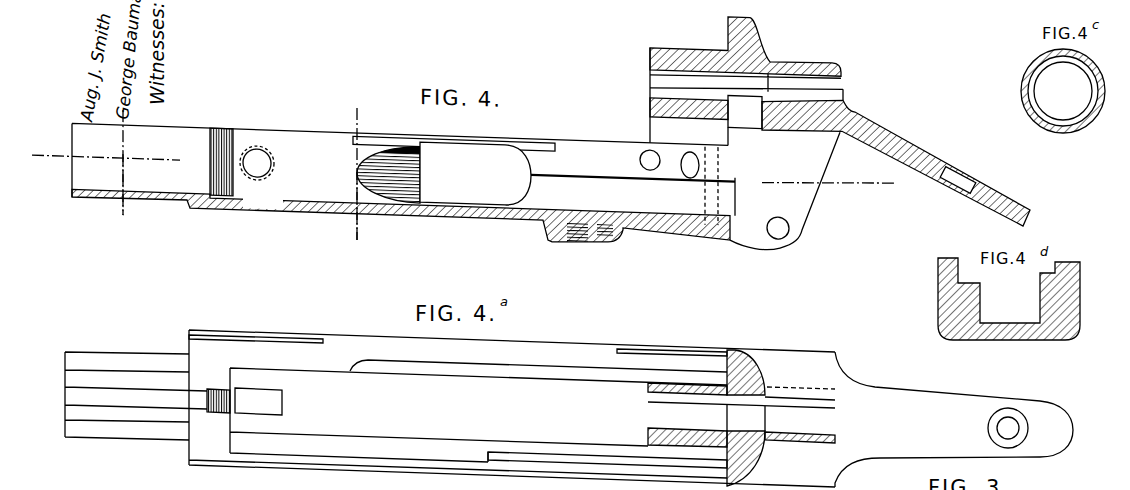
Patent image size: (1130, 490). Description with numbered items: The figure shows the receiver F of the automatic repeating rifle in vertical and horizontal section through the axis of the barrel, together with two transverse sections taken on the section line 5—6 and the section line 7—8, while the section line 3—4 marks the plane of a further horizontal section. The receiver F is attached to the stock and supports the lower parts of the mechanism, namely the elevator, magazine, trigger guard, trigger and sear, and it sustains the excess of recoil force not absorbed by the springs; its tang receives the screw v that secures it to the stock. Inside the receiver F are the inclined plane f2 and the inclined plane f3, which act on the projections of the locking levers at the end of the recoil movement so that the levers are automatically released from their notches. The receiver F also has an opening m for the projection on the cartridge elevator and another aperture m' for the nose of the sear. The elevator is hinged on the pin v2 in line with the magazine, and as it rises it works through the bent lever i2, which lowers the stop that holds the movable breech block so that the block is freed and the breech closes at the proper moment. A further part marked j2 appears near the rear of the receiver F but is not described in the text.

In FIG. 4, the section line 3—4 3 is at (102, 150).
In FIG. 4, the section line 3— 4 is at (828, 175).
In FIG. 4, the section line 5—6 5 is at (117, 155).
In FIG. 4, the section line 5— 6 is at (113, 188).
In FIG. 4, the section line 7—8 7 is at (350, 169).
In FIG. 4, the section line 7— 8 is at (361, 207).
In FIG. 4, the receiver F is at (551, 129).
In FIG. 4A, the receiver F is at (569, 408).
In FIG. 4C, the receiver F is at (1063, 91).
In FIG. 4D, the receiver F is at (1009, 299).
In FIG. 4, the inclined plane f2 is at (454, 134).
In FIG. 4A, the inclined plane f2 is at (520, 372).
In FIG. 4D, the inclined plane f2 is at (1031, 276).
In FIG. 4A, the inclined plane f3 is at (512, 462).
In FIG. 4D, the inclined plane f3 is at (967, 276).
In FIG. 4, the opening m is at (261, 177).
In FIG. 4A, the opening m is at (467, 415).
In FIG. 4, the aperture m' is at (745, 111).
In FIG. 4A, the aperture m' is at (746, 418).
In FIG. 4, the screw v is at (956, 140).
In FIG. 4, the pin v2 is at (650, 160).
In FIG. 4, the bent lever i2 is at (690, 165).
In FIG. 4, the pivot pin j2 is at (778, 228).